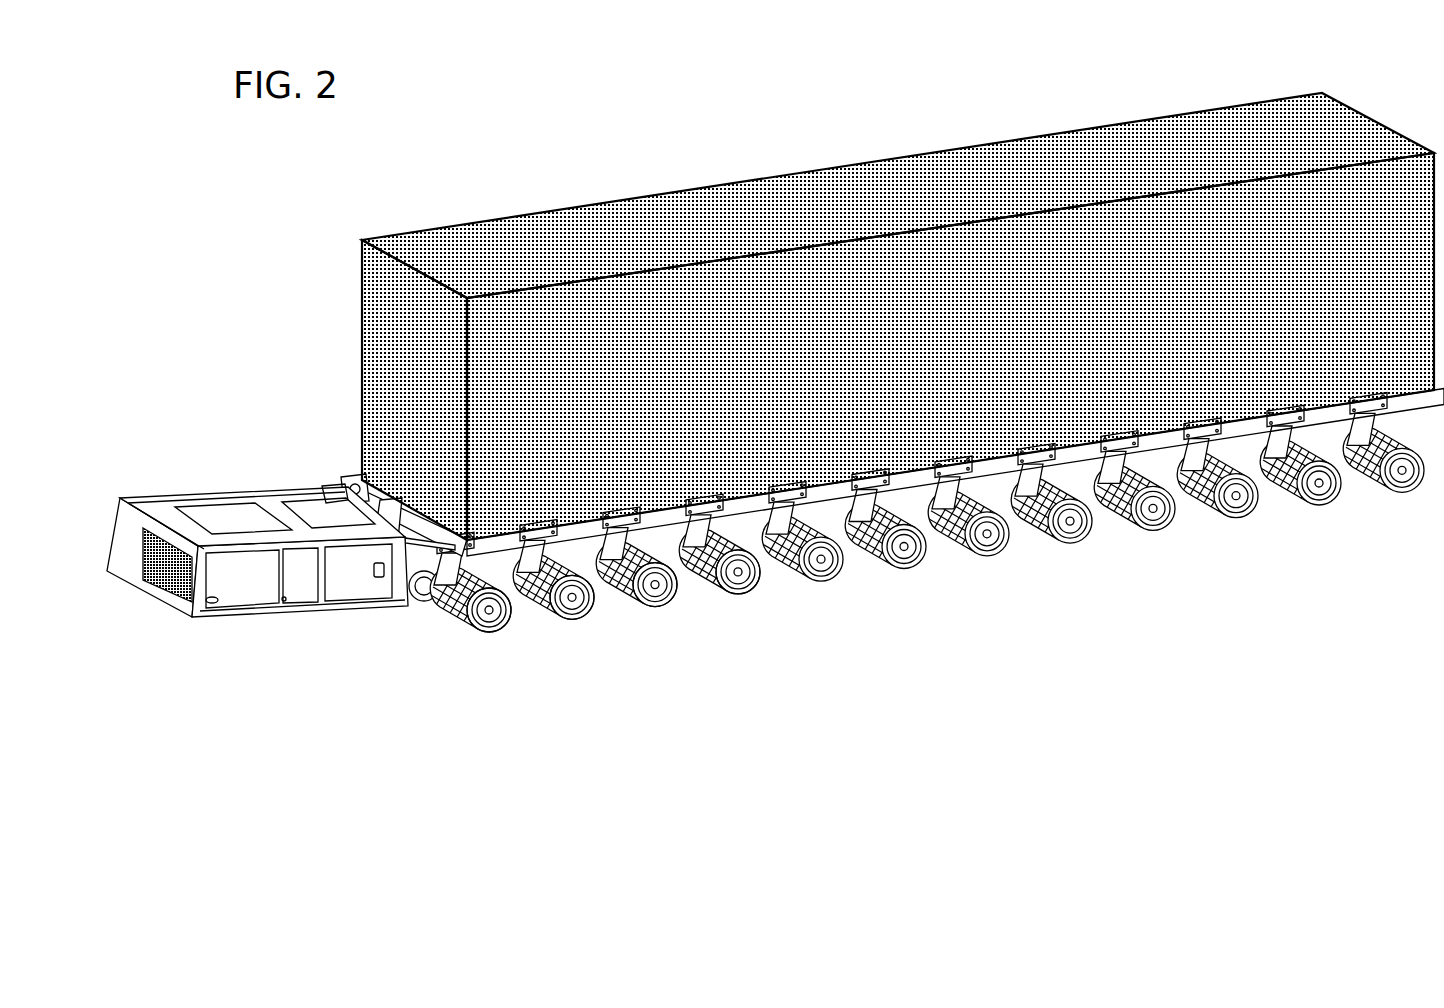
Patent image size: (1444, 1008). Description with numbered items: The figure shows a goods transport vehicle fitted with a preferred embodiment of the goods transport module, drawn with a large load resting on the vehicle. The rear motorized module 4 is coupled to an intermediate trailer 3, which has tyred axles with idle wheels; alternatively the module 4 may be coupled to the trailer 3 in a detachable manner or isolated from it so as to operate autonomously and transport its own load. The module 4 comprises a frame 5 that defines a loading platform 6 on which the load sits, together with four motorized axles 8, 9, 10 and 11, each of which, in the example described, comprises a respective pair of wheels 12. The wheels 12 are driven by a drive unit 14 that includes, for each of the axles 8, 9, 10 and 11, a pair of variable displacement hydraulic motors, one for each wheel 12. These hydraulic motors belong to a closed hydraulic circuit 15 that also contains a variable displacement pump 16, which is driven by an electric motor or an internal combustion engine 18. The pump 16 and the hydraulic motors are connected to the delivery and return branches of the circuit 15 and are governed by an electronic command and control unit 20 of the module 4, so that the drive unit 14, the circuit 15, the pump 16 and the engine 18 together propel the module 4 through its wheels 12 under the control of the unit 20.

The intermediate trailer 3 is at (880, 571).
The rear motorized module 4 is at (425, 688).
The frame 5 is at (663, 522).
The loading platform 6 is at (410, 505).
The motorized axle 8 is at (815, 625).
The motorized axle 9 is at (657, 627).
The motorized axle 10 is at (580, 640).
The motorized axle 11 is at (492, 650).
The wheels 12 is at (467, 633).
The drive unit 14 is at (305, 465).
The closed hydraulic circuit 15 is at (243, 539).
The variable displacement pump 16 is at (310, 515).
The internal combustion engine 18 is at (230, 517).
The electronic command and control unit 20 is at (160, 505).